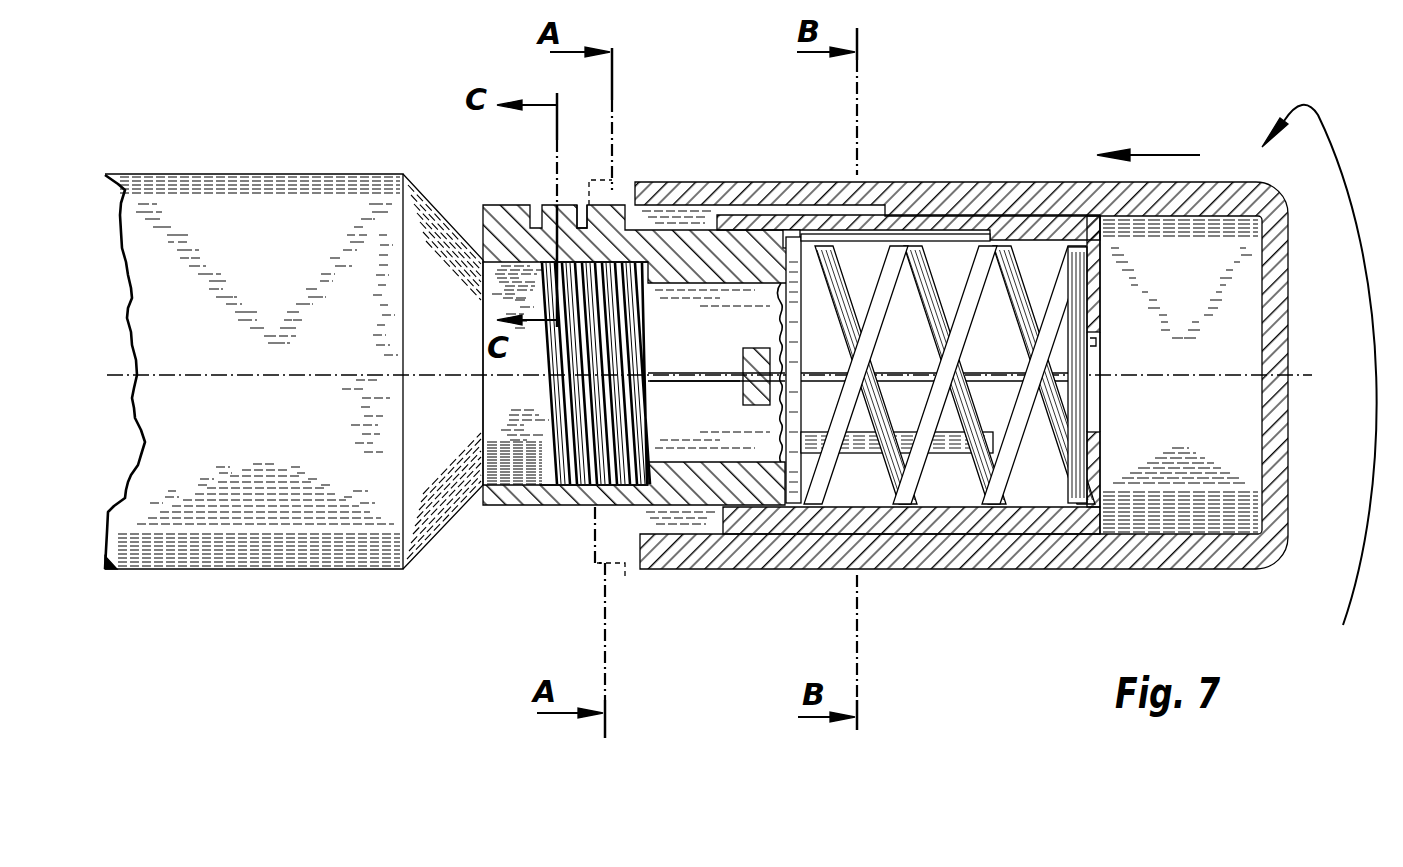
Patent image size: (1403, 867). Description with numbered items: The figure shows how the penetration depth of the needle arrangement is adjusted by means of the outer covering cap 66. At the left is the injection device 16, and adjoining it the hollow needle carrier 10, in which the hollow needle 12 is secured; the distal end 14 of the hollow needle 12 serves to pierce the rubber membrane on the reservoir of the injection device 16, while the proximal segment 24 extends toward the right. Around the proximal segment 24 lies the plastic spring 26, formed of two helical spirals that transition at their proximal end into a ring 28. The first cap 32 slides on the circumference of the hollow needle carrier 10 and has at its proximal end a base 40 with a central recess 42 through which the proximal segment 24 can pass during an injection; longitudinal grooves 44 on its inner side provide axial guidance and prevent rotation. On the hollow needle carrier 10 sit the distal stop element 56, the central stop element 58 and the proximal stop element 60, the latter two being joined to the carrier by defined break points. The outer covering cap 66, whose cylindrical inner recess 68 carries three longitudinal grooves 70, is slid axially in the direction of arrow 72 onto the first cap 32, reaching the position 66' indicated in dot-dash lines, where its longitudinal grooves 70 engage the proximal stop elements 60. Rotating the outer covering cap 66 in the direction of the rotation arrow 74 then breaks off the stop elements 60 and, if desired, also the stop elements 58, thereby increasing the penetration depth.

The hollow needle carrier 10 is at (765, 315).
The hollow needle 12 is at (689, 359).
The distal end 14 is at (677, 382).
The injection device 16 is at (341, 160).
The proximal segment 24 is at (988, 377).
The plastic spring 26 is at (970, 255).
The ring 28 is at (1073, 283).
The first cap 32 is at (910, 212).
The base 40 is at (1100, 270).
The recess 42 is at (1096, 340).
The longitudinal grooves 44 is at (860, 242).
The distal stop element 56 is at (480, 203).
The central stop element 58 is at (550, 203).
The proximal stop element 60 is at (578, 203).
The outer covering cap 66 is at (961, 328).
The position of outer covering cap 66' is at (637, 378).
The cylindrical inner recess 68 is at (678, 525).
The longitudinal grooves 70 is at (702, 212).
The arrow 72 is at (1170, 155).
The rotation arrow 74 is at (1338, 120).